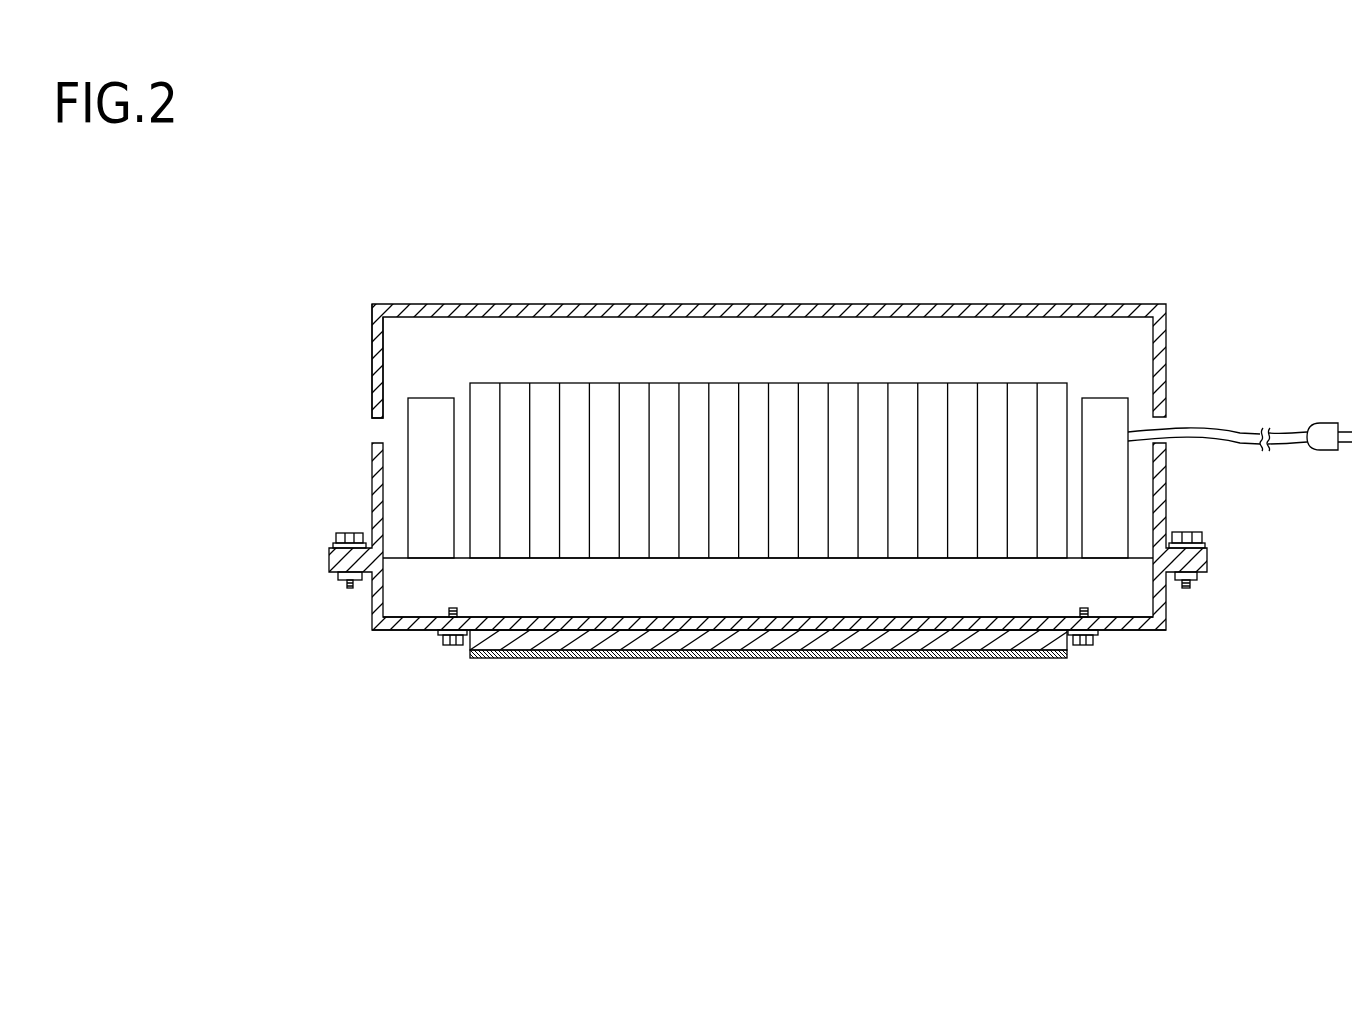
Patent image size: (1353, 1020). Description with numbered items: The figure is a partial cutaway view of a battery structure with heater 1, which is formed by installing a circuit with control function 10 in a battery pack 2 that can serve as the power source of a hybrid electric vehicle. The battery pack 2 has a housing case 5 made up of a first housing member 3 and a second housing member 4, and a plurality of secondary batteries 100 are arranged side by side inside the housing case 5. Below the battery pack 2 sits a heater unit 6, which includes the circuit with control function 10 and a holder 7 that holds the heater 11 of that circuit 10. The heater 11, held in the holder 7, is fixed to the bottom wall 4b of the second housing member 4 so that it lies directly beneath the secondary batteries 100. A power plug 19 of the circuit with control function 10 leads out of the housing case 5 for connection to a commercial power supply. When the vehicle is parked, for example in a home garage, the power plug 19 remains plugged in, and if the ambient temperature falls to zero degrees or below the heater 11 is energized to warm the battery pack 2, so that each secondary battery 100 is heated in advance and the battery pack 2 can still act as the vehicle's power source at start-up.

The battery structure with heater 1 is at (724, 271).
The battery pack 2 is at (1168, 462).
The first housing member 3 is at (1160, 345).
The second housing member 4 is at (1158, 607).
The bottom wall 4b is at (398, 628).
The housing case 5 is at (378, 352).
The heater unit 6 is at (765, 680).
The holder 7 is at (683, 660).
The circuit with control function 10 is at (1112, 493).
The heater 11 is at (548, 660).
The power plug 19 is at (1325, 431).
The secondary battery 100 is at (487, 395).